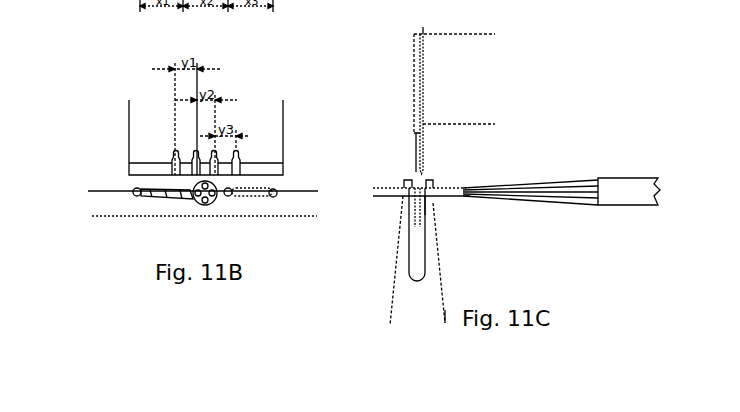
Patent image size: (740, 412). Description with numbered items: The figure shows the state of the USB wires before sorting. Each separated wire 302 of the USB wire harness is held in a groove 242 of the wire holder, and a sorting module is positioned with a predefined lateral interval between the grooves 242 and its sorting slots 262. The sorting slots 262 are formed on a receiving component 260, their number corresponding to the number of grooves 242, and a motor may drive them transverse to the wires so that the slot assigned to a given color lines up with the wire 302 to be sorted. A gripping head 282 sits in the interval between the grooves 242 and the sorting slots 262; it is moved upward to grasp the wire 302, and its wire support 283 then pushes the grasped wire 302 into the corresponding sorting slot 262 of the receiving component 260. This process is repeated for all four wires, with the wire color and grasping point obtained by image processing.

In FIG. 11B, the sorting slot 262 is at (324, 126).
In FIG. 11B, the groove 242 is at (277, 191).
In FIG. 11C, the receiving component 260 is at (426, 154).
In FIG. 11C, the wire 302 is at (458, 180).
In FIG. 11C, the wire support 283 is at (428, 207).
In FIG. 11C, the gripping head 282 is at (448, 270).